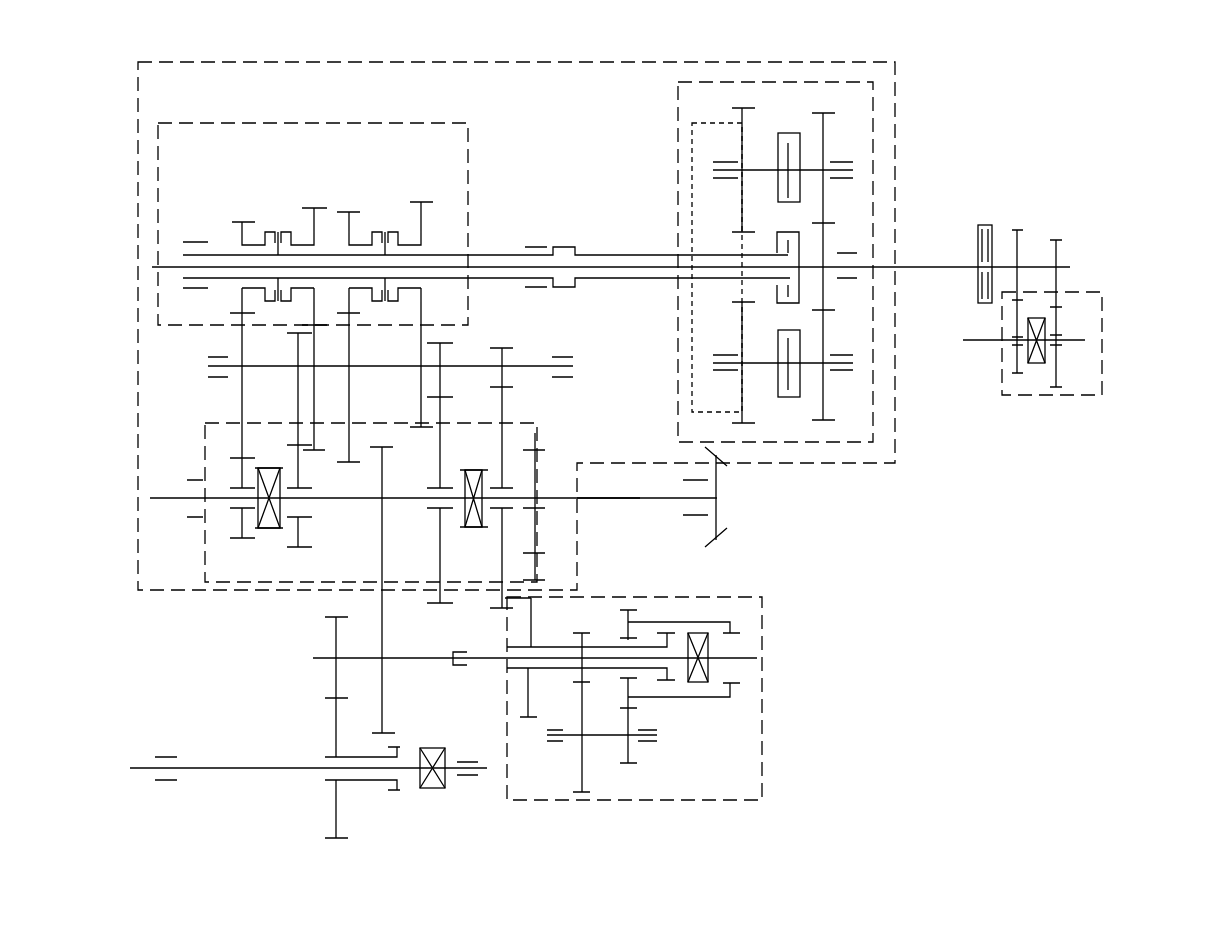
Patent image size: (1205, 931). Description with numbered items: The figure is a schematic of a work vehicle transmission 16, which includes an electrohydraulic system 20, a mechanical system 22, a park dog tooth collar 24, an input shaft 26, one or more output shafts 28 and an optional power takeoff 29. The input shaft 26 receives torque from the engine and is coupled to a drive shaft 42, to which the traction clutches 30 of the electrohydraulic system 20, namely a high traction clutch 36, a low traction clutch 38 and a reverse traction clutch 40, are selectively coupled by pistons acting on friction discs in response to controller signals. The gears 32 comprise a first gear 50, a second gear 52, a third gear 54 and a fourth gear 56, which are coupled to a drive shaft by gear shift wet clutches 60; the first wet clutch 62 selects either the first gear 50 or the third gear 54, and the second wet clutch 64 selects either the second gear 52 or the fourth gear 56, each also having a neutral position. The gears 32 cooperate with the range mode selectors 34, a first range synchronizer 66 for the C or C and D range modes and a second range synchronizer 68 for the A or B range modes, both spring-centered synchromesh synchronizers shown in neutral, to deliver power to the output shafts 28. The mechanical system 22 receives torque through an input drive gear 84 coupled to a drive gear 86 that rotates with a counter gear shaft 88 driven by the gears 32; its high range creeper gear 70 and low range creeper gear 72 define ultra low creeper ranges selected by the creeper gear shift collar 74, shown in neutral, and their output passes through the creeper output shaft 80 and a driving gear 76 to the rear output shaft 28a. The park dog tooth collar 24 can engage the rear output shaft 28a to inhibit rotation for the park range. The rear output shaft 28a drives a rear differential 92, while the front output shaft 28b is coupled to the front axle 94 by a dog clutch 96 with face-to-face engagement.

The transmission 16 is at (1092, 93).
The electrohydraulic system 20 is at (878, 55).
The mechanical system 22 is at (668, 803).
The park dog tooth collar 24 is at (706, 517).
The input shaft 26 is at (915, 267).
The output shafts 28 is at (703, 548).
The rear output shaft 28a is at (613, 501).
The front output shaft 28b is at (333, 735).
The power takeoff (PTO) 29 is at (1102, 342).
The traction clutches 30 is at (878, 155).
The gears 32 is at (448, 113).
The range mode selectors 34 is at (203, 555).
The high traction clutch 36 is at (800, 150).
The low traction clutch 38 is at (789, 230).
The reverse traction clutch 40 is at (802, 340).
The drive shaft 42 is at (608, 252).
The first gear 50 is at (233, 221).
The second gear 52 is at (341, 213).
The third gear 54 is at (304, 207).
The fourth gear 56 is at (425, 222).
The gear shift wet clutches 60 is at (258, 295).
The first wet clutch 62 is at (270, 300).
The second wet clutch 64 is at (396, 306).
The first range synchronizer 66 is at (262, 517).
The second range synchronizer 68 is at (483, 480).
The high range creeper gear 70 is at (672, 685).
The low range creeper gear 72 is at (732, 621).
The creeper gear shift collar 74 is at (710, 653).
The driving gear 76 is at (385, 688).
The creeper output shaft 80 is at (479, 655).
The input drive gear 84 is at (534, 548).
The drive gear 86 is at (506, 402).
The counter gear shaft 88 is at (527, 364).
The rear differential 92 is at (721, 493).
The front axle 94 is at (140, 768).
The dog clutch 96 is at (432, 790).